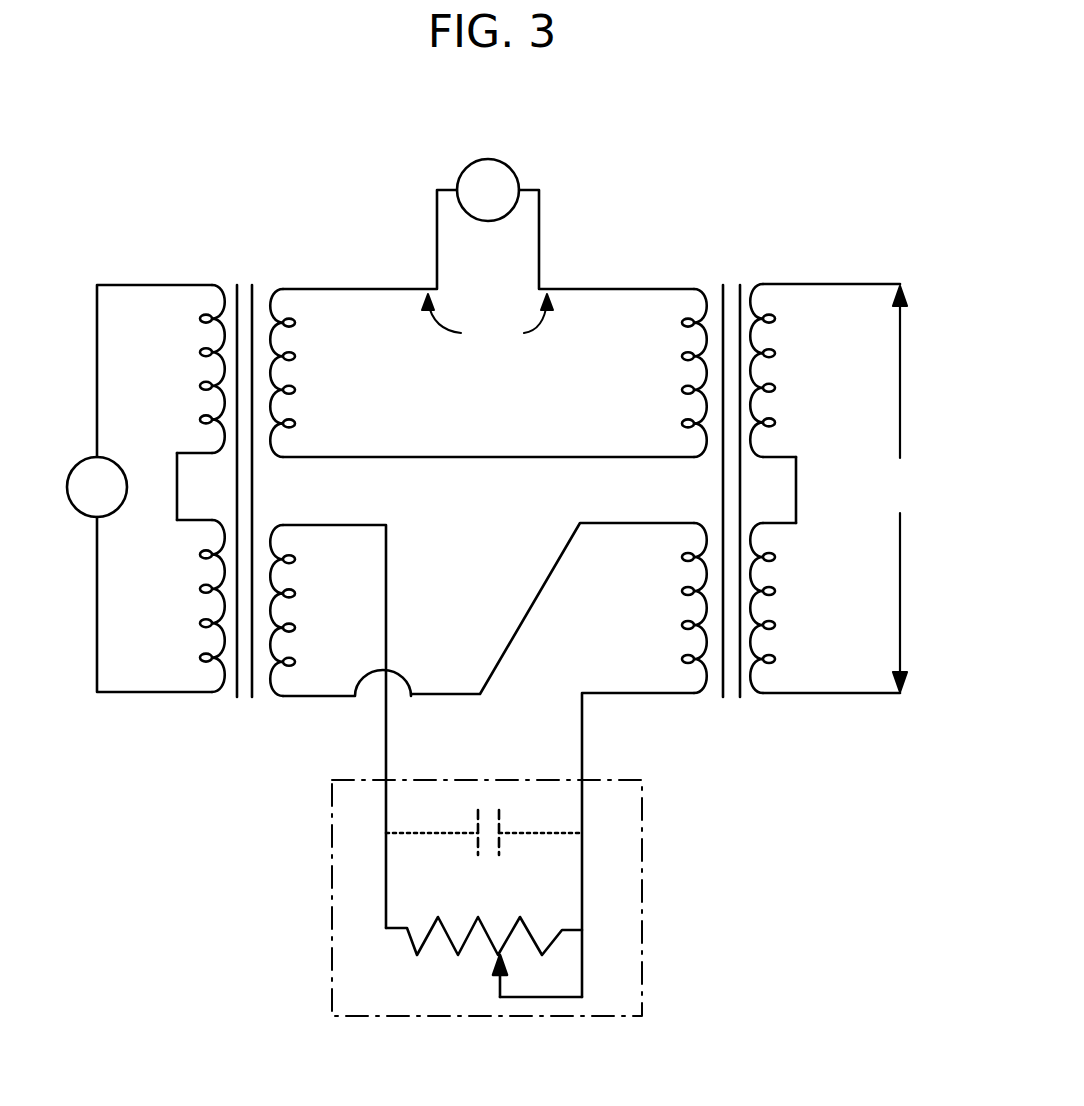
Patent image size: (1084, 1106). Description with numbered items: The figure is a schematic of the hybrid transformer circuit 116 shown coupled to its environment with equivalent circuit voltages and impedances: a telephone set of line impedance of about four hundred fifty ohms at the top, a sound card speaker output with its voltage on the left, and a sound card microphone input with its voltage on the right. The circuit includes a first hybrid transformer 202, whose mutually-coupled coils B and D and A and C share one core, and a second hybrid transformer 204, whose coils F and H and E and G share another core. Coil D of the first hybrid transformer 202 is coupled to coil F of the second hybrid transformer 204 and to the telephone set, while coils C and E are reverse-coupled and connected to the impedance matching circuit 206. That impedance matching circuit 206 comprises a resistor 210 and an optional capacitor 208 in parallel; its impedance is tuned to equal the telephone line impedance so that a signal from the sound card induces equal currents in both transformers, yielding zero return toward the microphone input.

The hybrid transformer circuit 116 is at (188, 845).
The first hybrid transformer 202 is at (245, 439).
The second hybrid transformer 204 is at (731, 439).
The impedance matching circuit 206 is at (642, 853).
The capacitor 208 is at (512, 840).
The resistor 210 is at (410, 942).